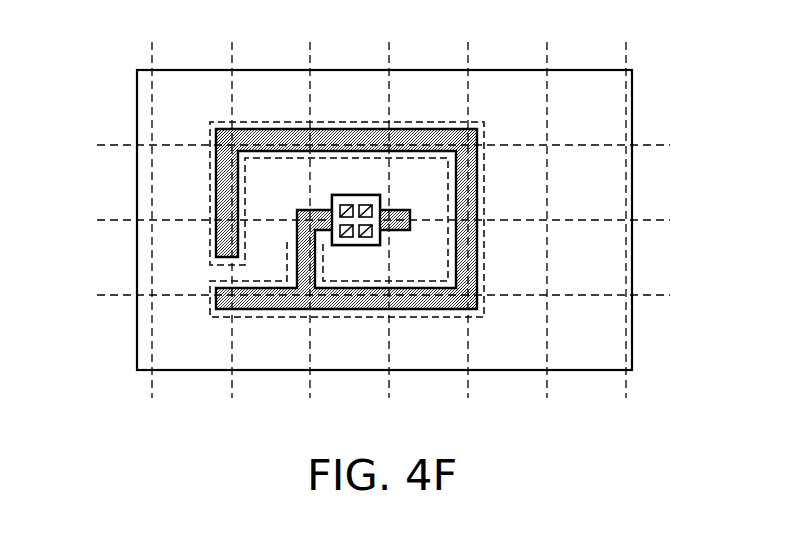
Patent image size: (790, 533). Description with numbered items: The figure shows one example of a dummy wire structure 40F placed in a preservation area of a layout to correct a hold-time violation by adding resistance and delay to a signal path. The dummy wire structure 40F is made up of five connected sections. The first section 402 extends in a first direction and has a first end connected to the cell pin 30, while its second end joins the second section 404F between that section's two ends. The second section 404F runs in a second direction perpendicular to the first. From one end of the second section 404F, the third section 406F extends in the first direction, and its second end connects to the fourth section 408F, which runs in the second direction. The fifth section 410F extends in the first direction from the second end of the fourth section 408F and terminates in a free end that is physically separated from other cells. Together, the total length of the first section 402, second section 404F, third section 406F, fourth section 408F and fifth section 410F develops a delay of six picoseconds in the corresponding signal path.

The cell pin 30 is at (318, 205).
The first section 402 is at (293, 251).
The second section 404F is at (342, 310).
The third section 406F is at (480, 198).
The fourth section 408F is at (430, 135).
The fifth section 410F is at (225, 188).
The dummy wire structure 40F is at (210, 316).